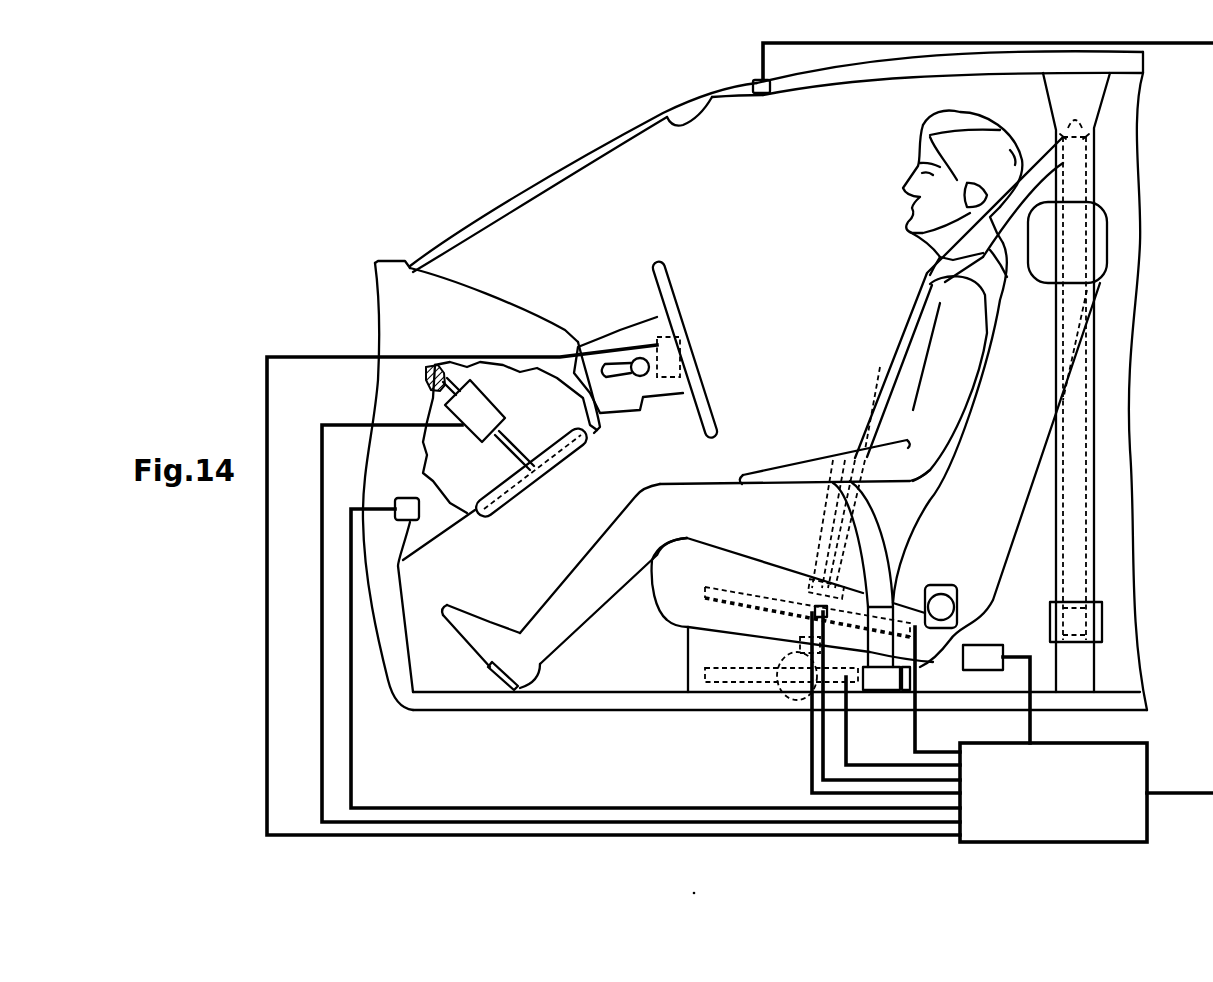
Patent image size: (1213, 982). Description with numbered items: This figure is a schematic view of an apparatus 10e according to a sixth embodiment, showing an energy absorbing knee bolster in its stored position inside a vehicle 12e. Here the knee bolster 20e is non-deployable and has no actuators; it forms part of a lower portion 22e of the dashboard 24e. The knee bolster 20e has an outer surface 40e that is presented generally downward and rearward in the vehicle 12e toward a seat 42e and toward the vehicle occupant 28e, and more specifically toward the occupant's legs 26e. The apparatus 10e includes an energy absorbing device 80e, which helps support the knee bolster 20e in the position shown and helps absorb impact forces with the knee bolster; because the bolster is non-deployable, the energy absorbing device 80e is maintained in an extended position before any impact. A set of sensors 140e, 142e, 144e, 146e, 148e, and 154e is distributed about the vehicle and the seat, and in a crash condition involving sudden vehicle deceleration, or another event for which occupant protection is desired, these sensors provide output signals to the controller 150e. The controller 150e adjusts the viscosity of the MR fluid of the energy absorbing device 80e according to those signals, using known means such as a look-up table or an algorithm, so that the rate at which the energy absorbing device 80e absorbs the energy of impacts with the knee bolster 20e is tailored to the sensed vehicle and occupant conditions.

The apparatus 10e is at (357, 342).
The vehicle 12e is at (445, 221).
The knee bolster 20e is at (575, 450).
The lower portion of the dashboard 22e is at (523, 517).
The dashboard 24e is at (527, 330).
The occupant's legs 26e is at (647, 517).
The vehicle occupant 28e is at (917, 350).
The outer surface 40e is at (544, 490).
The seat 42e is at (1027, 410).
The energy absorbing device 80e is at (483, 405).
The sensor 140e is at (777, 693).
The sensor 142e is at (700, 592).
The sensor 144e is at (410, 520).
The sensor 146e is at (705, 680).
The sensor 148e is at (979, 660).
The controller 150e is at (1047, 823).
The sensor 154e is at (807, 597).